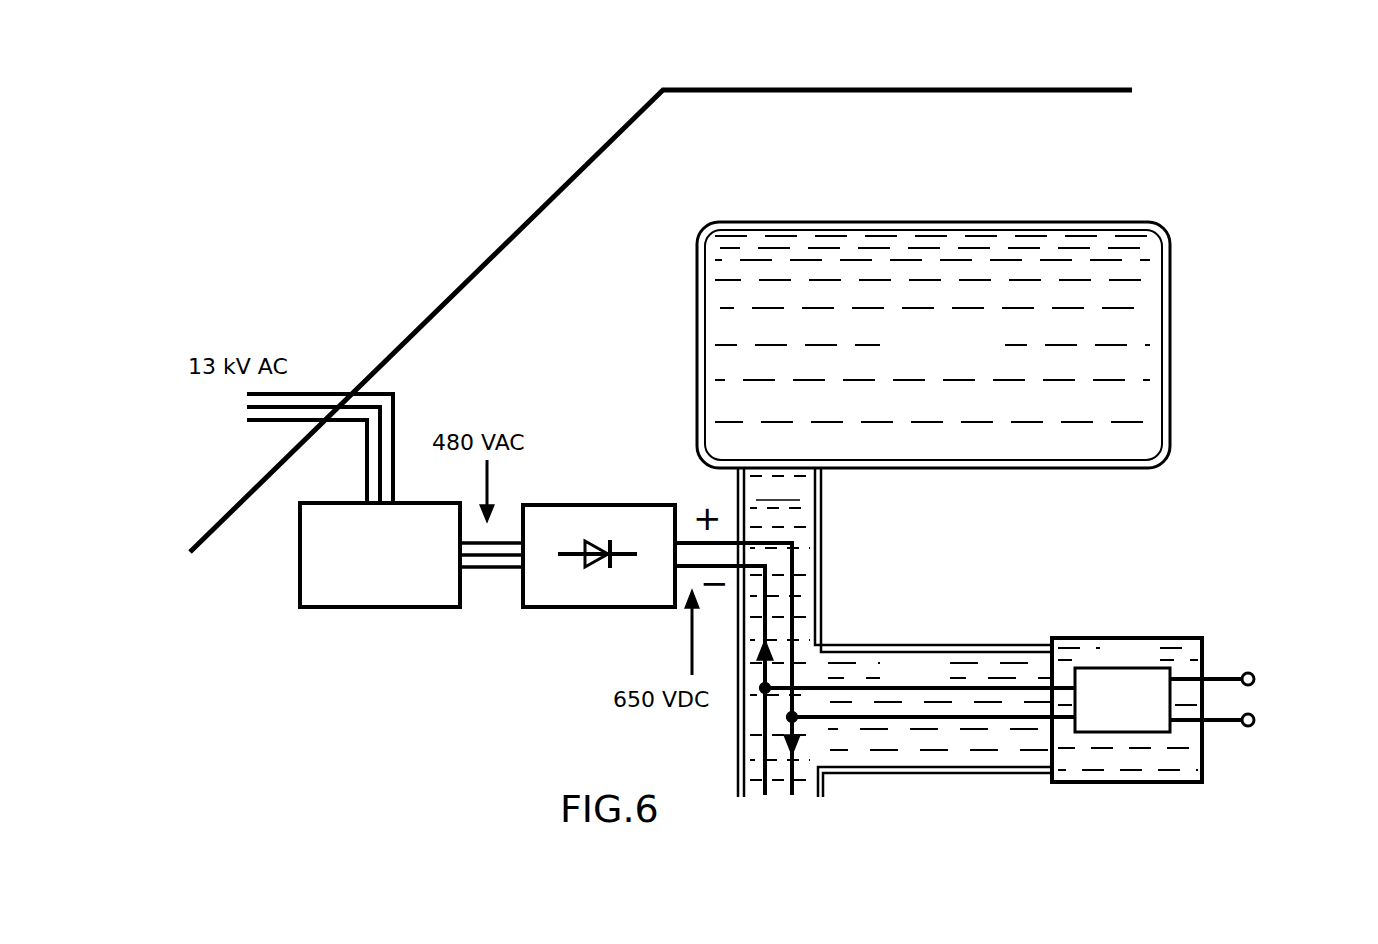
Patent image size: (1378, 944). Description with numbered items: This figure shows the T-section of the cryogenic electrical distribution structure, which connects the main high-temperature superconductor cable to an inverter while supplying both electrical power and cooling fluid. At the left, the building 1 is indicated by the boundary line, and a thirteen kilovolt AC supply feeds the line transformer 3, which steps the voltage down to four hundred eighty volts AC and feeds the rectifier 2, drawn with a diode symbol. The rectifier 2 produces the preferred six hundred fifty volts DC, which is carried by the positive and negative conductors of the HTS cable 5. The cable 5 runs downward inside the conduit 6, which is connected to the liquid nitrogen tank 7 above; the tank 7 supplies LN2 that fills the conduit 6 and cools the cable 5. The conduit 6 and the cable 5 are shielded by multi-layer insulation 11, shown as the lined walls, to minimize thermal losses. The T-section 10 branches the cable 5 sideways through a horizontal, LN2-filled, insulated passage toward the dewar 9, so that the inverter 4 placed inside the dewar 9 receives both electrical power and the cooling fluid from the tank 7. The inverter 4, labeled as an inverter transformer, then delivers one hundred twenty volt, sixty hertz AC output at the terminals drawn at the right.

The high-rise building 1 is at (545, 205).
The rectifier 2 is at (575, 520).
The line transformer 3 is at (337, 597).
The inverter 4 is at (1130, 712).
The high-temperature superconductor cable 5 is at (806, 803).
The conduit 6 is at (816, 518).
The liquid nitrogen tank 7 is at (1047, 250).
The dewar 9 is at (1195, 638).
The T-section 10 is at (833, 638).
The multi-layer insulation 11 is at (822, 537).